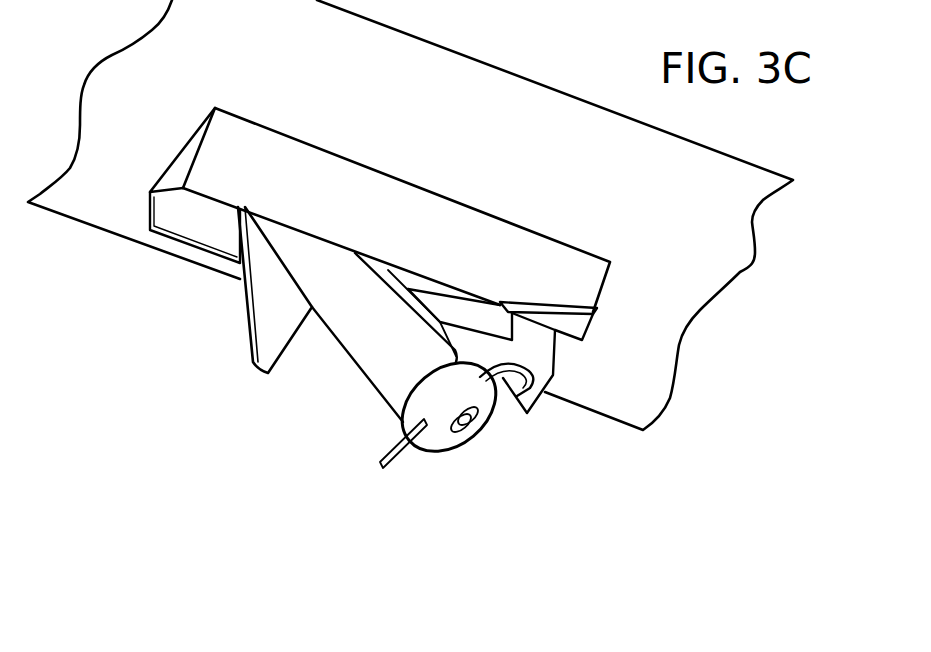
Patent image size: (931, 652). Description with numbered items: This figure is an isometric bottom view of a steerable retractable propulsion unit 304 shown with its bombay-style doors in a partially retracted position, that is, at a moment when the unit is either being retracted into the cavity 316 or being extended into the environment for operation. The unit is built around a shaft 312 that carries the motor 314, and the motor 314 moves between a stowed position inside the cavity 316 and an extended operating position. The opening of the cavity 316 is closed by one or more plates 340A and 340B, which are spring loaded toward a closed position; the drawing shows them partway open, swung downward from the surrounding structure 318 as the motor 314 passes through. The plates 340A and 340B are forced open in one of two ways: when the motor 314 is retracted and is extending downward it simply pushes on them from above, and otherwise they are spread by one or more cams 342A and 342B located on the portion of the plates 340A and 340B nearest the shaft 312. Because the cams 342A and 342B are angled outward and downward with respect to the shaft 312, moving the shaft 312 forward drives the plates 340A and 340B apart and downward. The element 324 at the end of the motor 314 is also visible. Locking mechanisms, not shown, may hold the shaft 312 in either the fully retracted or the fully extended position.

The retractable propulsion unit 304 is at (384, 291).
The shaft 312 is at (473, 322).
The motor 314 is at (358, 343).
The cavity 316 is at (364, 209).
The panel 318 is at (712, 243).
The roller 324 is at (448, 398).
The plate 340A is at (322, 188).
The plate 340B is at (187, 223).
The cam 342A is at (573, 330).
The cam 342B is at (527, 397).